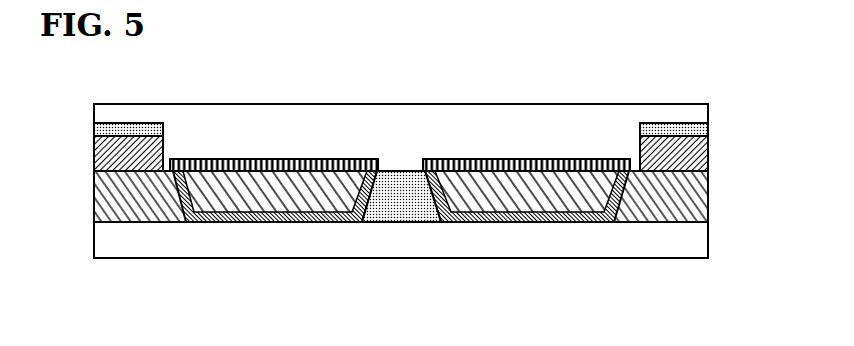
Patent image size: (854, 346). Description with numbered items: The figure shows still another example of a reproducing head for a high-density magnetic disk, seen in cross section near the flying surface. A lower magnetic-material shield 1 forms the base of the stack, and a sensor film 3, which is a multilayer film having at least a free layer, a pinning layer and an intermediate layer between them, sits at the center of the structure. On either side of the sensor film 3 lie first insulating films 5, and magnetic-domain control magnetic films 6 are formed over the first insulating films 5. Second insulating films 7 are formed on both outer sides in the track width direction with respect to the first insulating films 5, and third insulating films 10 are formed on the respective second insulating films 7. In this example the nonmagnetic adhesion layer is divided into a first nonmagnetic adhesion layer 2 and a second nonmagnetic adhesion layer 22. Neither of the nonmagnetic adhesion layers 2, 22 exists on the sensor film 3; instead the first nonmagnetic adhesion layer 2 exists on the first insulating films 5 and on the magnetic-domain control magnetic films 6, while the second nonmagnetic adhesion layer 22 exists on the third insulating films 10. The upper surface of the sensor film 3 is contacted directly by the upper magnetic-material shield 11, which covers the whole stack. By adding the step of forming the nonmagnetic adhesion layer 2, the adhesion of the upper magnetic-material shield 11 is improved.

The lower magnetic-material shield 1 is at (607, 250).
The first nonmagnetic adhesion layer 2 is at (440, 168).
The sensor film 3 is at (397, 195).
The first insulating films 5 is at (308, 222).
The magnetic-domain control magnetic films 6 is at (247, 190).
The second insulating films 7 is at (108, 198).
The third insulating films 10 is at (112, 165).
The upper magnetic-material shield 11 is at (575, 117).
The second nonmagnetic adhesion layer 22 is at (97, 127).